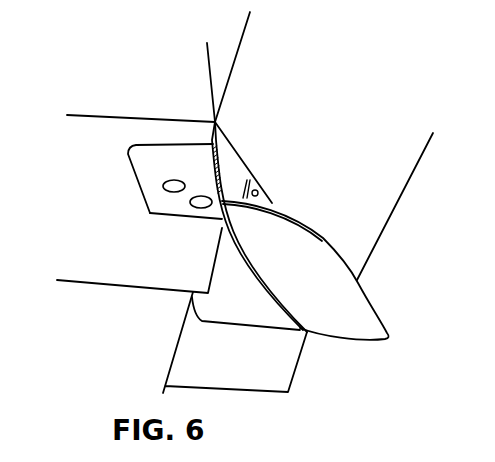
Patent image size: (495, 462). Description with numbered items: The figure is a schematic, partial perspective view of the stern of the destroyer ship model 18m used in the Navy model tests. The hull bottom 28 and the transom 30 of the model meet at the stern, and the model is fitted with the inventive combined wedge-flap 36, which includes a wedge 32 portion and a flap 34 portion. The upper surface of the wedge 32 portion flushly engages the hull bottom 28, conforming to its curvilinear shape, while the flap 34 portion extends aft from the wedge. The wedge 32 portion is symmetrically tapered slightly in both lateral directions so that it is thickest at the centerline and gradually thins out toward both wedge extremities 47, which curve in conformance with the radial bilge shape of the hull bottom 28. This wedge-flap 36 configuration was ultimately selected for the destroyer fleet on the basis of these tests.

The DDG 51 ship model 18m is at (128, 21).
The hull bottom 28 is at (88, 188).
The transom 30 is at (255, 72).
The wedge portion 32 is at (137, 192).
The flap portion 34 is at (305, 303).
The combined wedge-flap 36 is at (210, 235).
The wedge extremities 47 is at (125, 165).